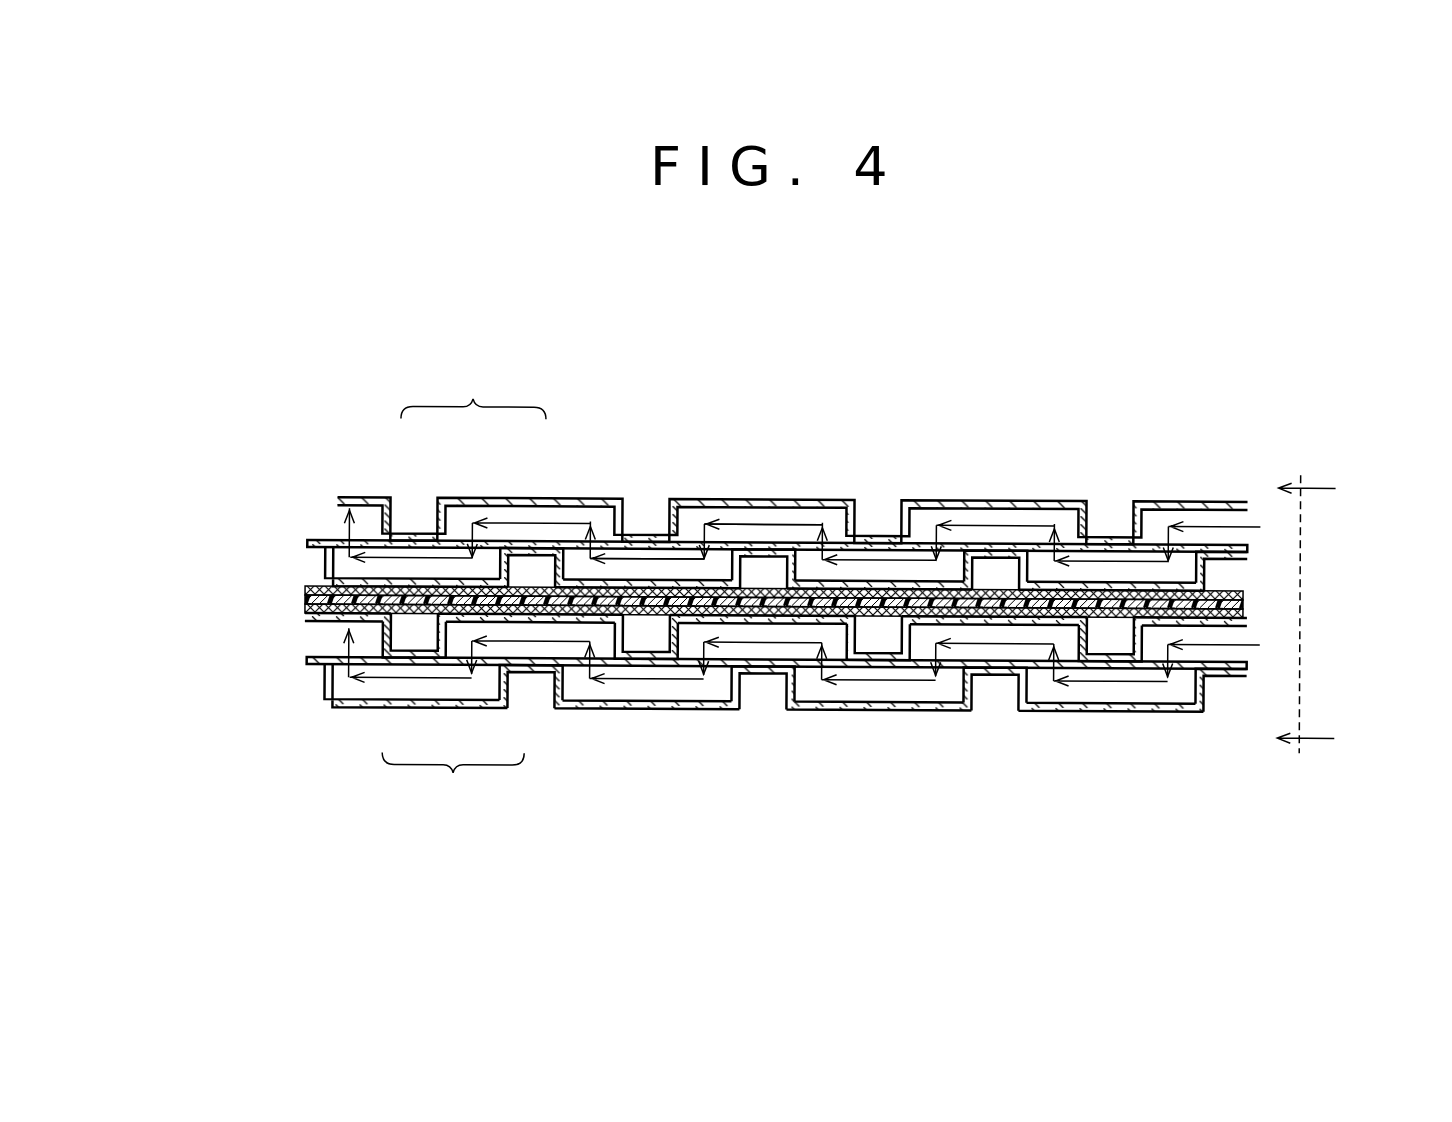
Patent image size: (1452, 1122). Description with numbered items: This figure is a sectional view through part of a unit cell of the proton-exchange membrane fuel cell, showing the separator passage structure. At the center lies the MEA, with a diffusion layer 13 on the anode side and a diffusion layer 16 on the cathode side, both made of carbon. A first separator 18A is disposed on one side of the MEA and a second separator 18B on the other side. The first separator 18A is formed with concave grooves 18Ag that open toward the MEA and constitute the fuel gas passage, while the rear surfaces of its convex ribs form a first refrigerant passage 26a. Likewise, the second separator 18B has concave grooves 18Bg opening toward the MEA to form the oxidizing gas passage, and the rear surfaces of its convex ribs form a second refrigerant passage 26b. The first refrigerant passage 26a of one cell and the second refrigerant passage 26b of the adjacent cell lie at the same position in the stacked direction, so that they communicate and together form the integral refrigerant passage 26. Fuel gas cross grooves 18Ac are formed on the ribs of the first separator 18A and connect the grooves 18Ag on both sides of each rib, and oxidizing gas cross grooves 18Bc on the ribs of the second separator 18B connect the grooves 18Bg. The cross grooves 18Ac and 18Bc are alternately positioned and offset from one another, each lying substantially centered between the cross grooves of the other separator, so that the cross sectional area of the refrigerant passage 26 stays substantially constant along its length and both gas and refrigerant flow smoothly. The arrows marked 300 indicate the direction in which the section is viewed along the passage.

The first separator 18A is at (363, 518).
The second separator 18B is at (340, 532).
The diffusion layer 16 is at (333, 540).
The membrane-electrode assembly MEA is at (305, 597).
The diffusion layer 13 is at (305, 615).
The fuel gas cross groove 18Ac is at (380, 697).
The oxidizing gas cross groove 18Bc is at (530, 570).
The concave groove of second separator 18Bg is at (690, 573).
The concave groove of first separator 18Ag is at (698, 510).
The refrigerant passage 26 is at (464, 586).
The first refrigerant passage 26a is at (460, 515).
The second refrigerant passage 26b is at (457, 568).
The stacking direction 300 is at (1348, 609).